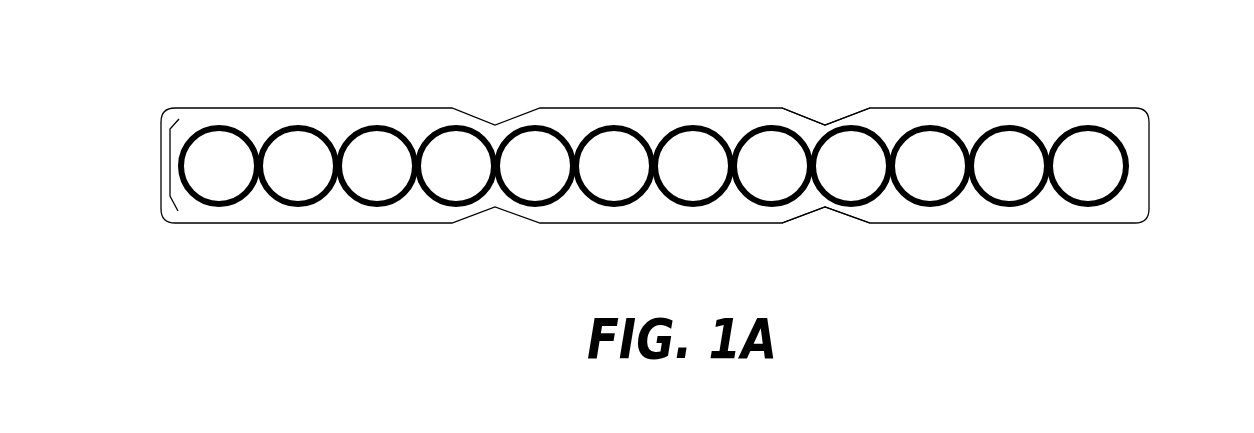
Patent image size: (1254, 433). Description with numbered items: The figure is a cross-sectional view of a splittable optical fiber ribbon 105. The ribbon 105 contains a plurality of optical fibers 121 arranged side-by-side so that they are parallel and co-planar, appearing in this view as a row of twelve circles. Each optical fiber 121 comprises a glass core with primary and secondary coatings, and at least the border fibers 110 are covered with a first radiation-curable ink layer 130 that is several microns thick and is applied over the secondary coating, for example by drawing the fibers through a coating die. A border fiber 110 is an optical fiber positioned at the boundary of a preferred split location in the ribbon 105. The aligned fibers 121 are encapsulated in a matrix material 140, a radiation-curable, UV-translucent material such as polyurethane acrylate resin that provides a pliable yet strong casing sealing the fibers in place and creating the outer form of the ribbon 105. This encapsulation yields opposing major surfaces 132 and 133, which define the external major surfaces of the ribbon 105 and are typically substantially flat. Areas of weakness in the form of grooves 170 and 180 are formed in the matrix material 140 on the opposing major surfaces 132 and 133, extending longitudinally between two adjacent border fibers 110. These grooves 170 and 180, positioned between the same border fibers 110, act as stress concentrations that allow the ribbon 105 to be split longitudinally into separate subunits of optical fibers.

The optical fiber ribbon 105 is at (663, 181).
The border fiber 110 is at (777, 147).
The optical fibers 121 is at (170, 162).
The first radiation-curable ink layer 130 is at (354, 129).
The major surface 132 is at (658, 108).
The major surface 133 is at (657, 224).
The matrix material 140 is at (1125, 201).
The groove 170 is at (825, 124).
The groove 180 is at (825, 208).